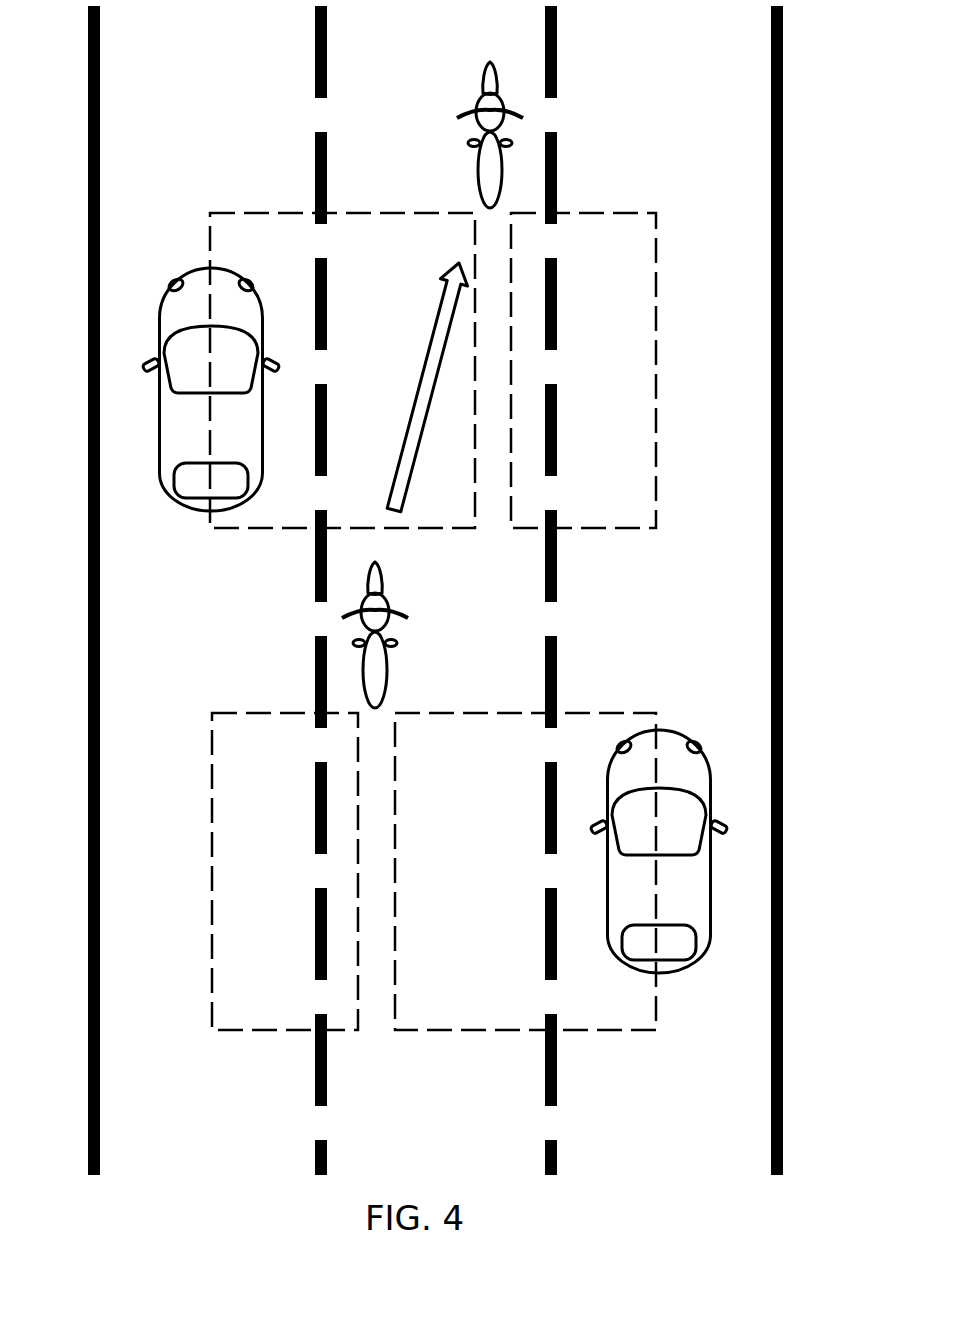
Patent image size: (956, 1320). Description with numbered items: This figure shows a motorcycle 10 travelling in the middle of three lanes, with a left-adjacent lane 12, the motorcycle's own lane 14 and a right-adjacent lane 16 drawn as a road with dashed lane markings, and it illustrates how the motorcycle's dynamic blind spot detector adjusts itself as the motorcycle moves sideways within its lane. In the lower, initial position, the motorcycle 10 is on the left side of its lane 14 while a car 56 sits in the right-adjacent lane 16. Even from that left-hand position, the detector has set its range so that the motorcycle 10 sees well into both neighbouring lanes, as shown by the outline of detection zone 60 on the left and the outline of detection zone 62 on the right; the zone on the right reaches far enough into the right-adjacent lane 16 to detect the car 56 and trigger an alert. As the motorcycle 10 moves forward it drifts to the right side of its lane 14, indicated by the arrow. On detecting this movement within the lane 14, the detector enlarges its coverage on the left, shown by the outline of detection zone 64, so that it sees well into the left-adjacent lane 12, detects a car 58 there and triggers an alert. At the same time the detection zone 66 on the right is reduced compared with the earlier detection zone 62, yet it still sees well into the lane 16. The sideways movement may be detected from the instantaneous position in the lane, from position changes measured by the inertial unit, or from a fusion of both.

The motorcycle 10 is at (483, 78).
The left-adjacent lane 12 is at (236, 1123).
The lane 14 is at (456, 1123).
The right-adjacent lane 16 is at (676, 1123).
The car 56 is at (683, 735).
The car 58 is at (198, 267).
The detection zone 60 is at (233, 713).
The detection zone 62 is at (598, 713).
The detection zone 64 is at (282, 213).
The detection zone 66 is at (617, 213).